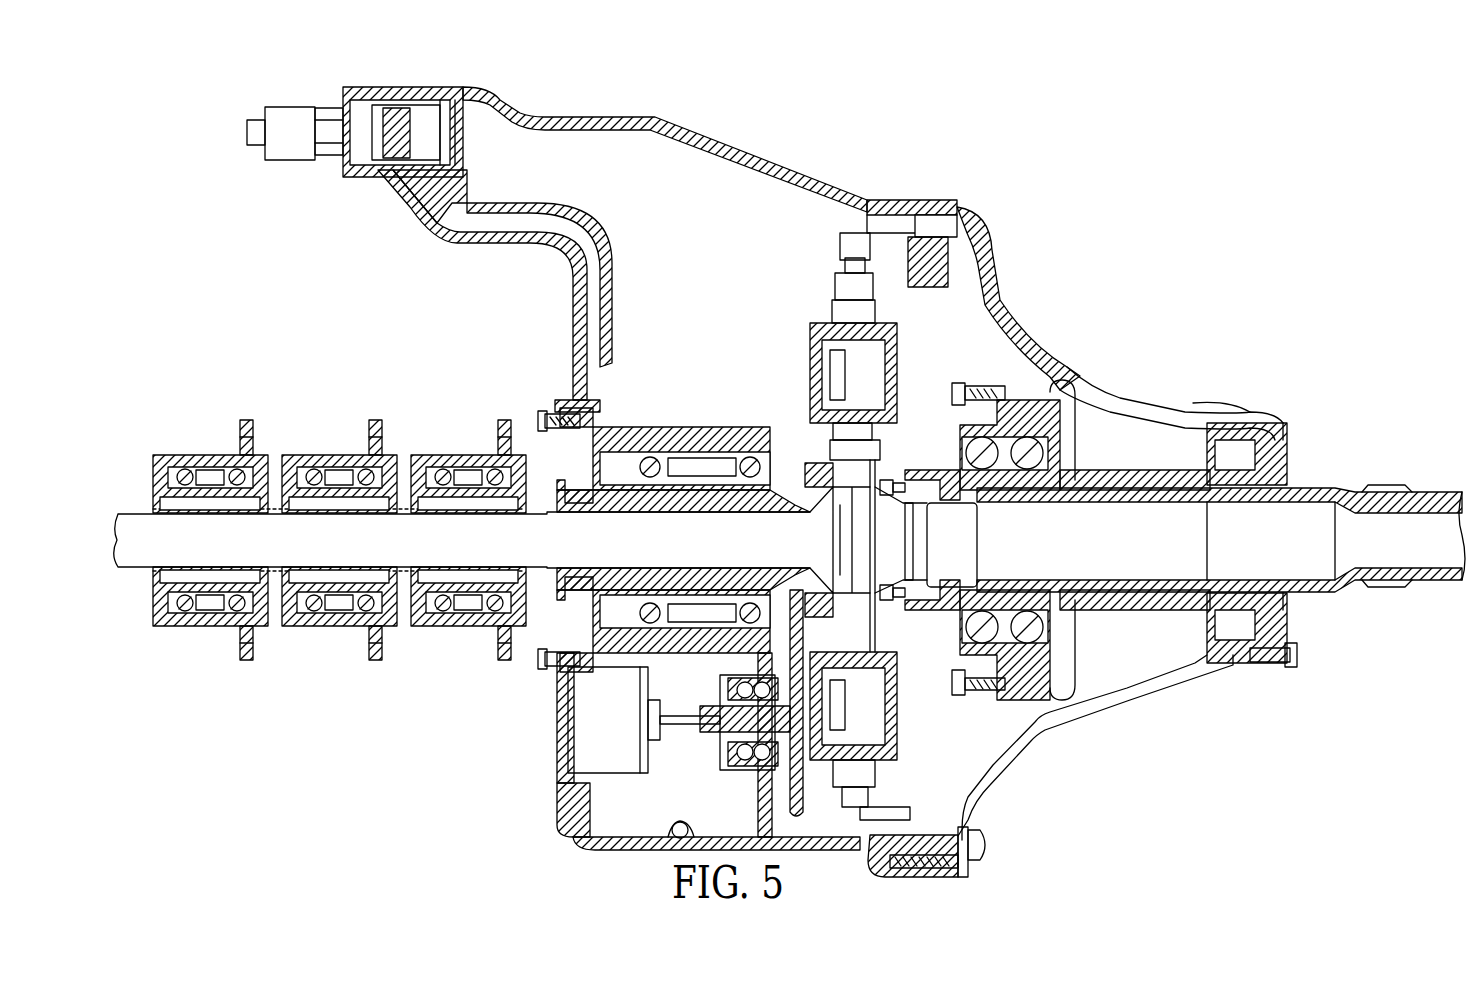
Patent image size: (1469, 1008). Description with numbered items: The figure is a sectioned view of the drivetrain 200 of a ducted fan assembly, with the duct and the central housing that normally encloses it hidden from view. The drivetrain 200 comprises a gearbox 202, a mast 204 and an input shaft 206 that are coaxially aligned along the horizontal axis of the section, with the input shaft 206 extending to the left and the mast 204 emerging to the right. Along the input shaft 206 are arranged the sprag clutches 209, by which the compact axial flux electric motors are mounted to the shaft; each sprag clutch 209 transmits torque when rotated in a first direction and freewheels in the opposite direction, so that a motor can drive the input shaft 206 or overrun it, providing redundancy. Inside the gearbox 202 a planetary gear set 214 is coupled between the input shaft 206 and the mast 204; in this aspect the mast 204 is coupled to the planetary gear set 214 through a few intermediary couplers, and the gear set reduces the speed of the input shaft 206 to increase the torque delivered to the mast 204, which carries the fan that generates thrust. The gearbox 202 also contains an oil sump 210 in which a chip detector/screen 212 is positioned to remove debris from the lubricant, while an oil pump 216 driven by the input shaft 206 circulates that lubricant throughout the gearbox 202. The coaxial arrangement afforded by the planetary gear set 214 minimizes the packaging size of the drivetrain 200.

The drivetrain 200 is at (1157, 98).
The gearbox 202 is at (1015, 300).
The mast 204 is at (1425, 583).
The input shaft 206 is at (140, 570).
The sprag clutch 209 is at (192, 628).
The oil sump 210 is at (590, 115).
The chip detector/screen 212 is at (405, 87).
The planetary gear set 214 is at (897, 717).
The oil pump 216 is at (628, 735).